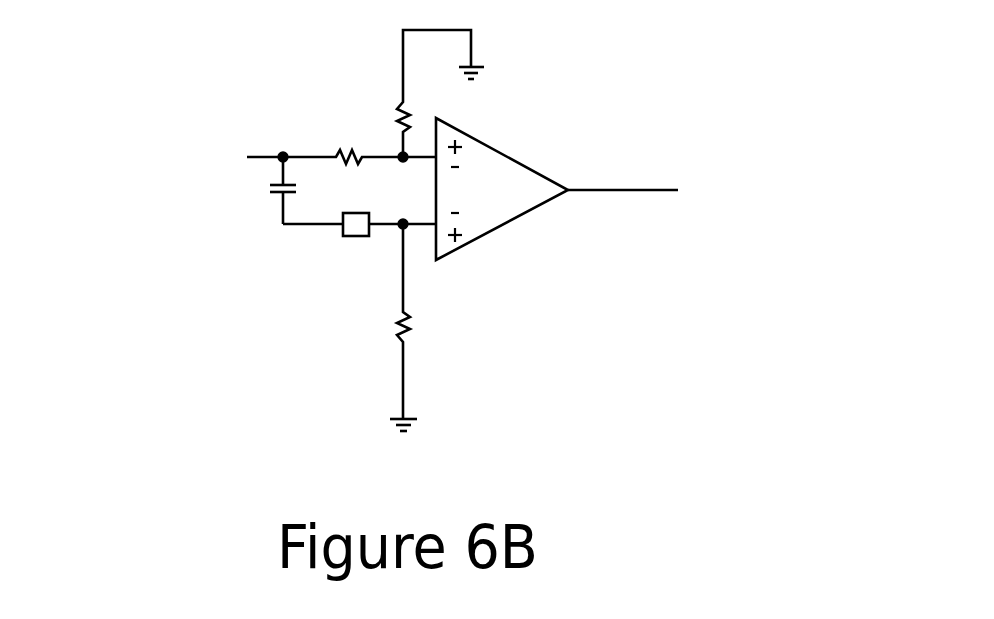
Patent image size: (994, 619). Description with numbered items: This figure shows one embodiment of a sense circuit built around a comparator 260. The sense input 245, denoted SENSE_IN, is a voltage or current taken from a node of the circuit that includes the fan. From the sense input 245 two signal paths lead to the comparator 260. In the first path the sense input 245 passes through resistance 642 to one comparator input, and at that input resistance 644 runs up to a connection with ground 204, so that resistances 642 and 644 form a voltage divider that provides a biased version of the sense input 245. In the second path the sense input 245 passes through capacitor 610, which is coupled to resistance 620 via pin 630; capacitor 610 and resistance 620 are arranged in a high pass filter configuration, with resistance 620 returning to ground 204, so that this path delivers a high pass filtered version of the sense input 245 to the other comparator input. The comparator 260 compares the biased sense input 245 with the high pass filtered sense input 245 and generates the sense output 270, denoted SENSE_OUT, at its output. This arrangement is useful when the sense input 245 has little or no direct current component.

The ground 204 is at (488, 249).
The sense input 245 is at (192, 155).
The comparator 260 is at (513, 185).
The sense output 270 is at (734, 191).
The capacitor 610 is at (255, 200).
The resistance 620 is at (456, 321).
The pin 630 is at (350, 269).
The resistance 642 is at (340, 125).
The resistance 644 is at (376, 93).